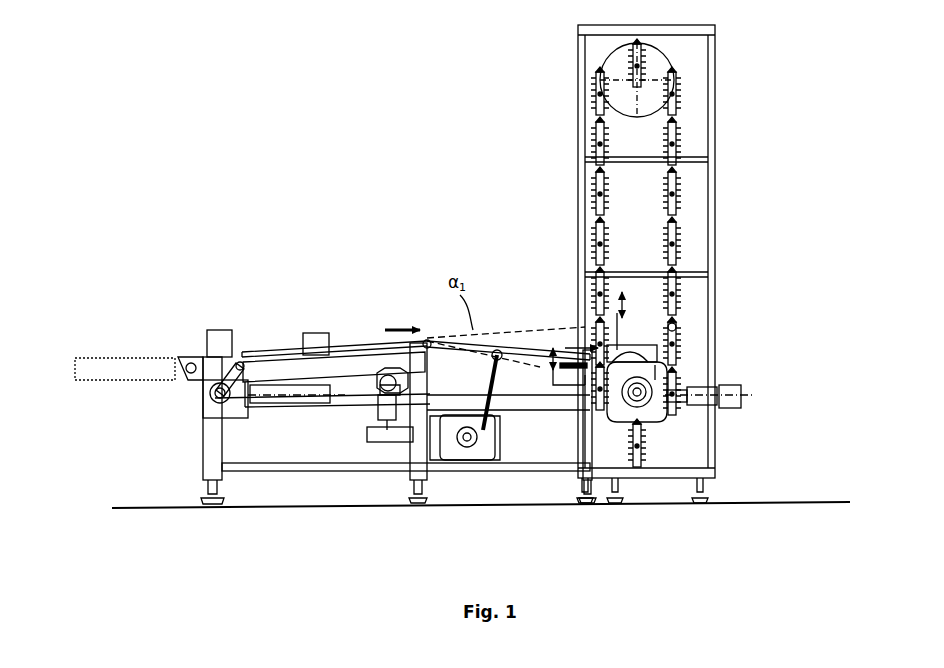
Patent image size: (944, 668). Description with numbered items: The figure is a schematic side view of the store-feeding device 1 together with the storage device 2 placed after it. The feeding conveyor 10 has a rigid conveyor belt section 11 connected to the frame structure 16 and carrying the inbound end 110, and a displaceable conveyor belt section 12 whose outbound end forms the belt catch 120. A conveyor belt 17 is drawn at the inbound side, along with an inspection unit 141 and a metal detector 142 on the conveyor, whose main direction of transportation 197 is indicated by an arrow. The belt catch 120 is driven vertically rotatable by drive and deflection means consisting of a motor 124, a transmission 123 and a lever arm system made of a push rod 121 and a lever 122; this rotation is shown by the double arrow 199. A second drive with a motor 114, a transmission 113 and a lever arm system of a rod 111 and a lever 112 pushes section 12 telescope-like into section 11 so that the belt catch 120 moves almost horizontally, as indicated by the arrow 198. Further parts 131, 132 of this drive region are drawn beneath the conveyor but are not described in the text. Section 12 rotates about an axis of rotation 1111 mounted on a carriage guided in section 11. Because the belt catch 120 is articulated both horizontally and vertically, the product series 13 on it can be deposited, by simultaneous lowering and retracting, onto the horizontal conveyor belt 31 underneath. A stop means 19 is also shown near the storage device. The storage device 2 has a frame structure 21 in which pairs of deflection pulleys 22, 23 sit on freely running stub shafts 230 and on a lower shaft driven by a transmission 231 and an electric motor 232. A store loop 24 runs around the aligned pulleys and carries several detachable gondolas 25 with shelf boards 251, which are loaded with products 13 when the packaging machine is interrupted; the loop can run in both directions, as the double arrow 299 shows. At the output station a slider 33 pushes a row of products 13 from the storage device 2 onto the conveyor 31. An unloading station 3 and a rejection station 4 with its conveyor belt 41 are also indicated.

The store-feeding device 1 is at (578, 325).
The storage device 2 is at (568, 95).
The unloading station 3 is at (572, 375).
The rejection station 4 is at (573, 388).
The feeding conveyor 10 is at (350, 328).
The conveyor belt section 11 is at (237, 357).
The conveyor belt section 12 is at (427, 338).
The product series 13 is at (497, 350).
The frame structure 16 is at (213, 442).
The conveyor belt 17 is at (135, 357).
The stop means 19 is at (597, 243).
The frame structure 21 is at (712, 103).
The deflection pulley 22 is at (615, 58).
The deflection pulley 23 is at (675, 352).
The store loop 24 is at (657, 370).
The gondola 25 is at (668, 183).
The conveyor belt 31 is at (603, 415).
The slider 33 is at (677, 327).
The conveyor belt 41 is at (556, 403).
The inbound end 110 is at (187, 357).
The rod 111 is at (283, 357).
The lever 112 is at (203, 415).
The transmission 113 is at (212, 508).
The motor 114 is at (292, 398).
The belt catch 120 is at (600, 300).
The push rod 121 is at (490, 410).
The lever 122 is at (467, 448).
The transmission 123 is at (445, 447).
The motor 124 is at (373, 445).
The actuator 131 is at (398, 445).
The cylinder 132 is at (677, 313).
The inspection unit 141 is at (207, 333).
The metal detector 142 is at (290, 347).
The main direction of transportation 197 is at (397, 330).
The direction of forward and backward motion 198 is at (550, 335).
The direction of upward and downward rotation 199 is at (532, 350).
The stub shaft 230 is at (655, 436).
The transmission 231 is at (655, 421).
The motor 232 is at (720, 397).
The shelf board 251 is at (600, 228).
The direction of transport 299 is at (623, 293).
The axis of rotation 1111 is at (370, 330).